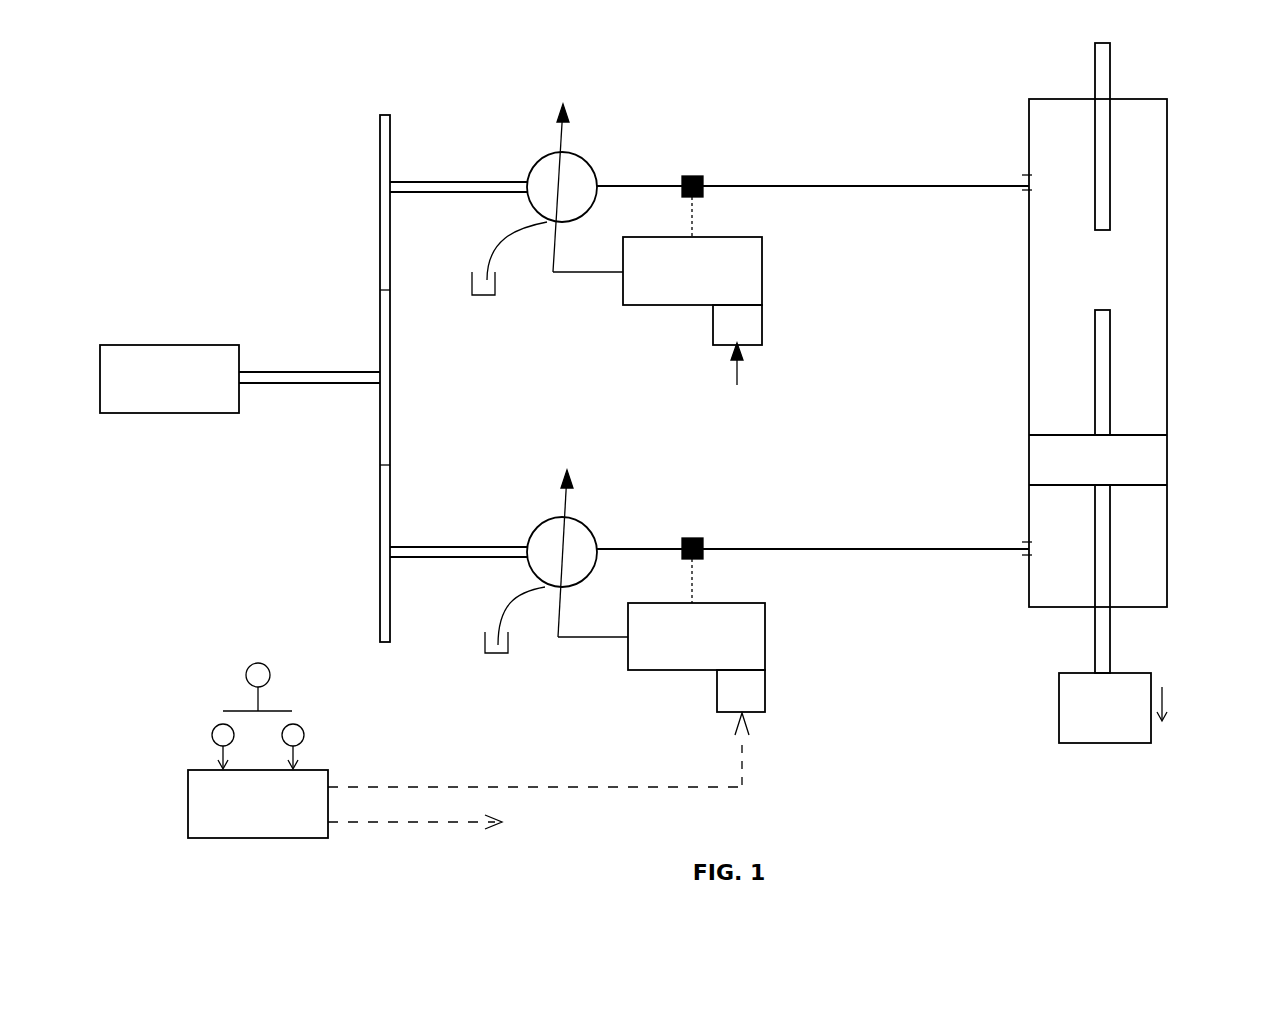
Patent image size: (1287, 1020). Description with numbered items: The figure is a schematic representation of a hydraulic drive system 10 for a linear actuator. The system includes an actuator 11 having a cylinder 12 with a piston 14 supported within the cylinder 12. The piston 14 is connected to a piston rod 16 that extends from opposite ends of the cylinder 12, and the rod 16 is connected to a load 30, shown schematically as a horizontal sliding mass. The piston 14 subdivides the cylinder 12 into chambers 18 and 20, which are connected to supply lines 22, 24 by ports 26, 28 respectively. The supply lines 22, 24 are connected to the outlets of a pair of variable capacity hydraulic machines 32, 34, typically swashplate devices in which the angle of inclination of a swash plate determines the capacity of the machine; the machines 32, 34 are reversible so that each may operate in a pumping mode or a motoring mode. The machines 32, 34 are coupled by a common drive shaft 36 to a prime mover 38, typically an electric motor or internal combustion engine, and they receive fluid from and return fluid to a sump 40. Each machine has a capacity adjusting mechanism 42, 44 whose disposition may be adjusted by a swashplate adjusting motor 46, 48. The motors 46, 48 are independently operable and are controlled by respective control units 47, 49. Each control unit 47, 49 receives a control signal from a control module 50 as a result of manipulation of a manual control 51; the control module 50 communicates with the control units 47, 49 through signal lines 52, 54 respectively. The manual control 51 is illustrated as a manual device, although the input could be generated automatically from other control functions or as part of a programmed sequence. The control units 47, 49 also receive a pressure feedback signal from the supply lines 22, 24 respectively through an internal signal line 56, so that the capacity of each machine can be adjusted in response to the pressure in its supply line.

The hydraulic drive system 10 is at (726, 118).
The actuator 11 is at (1062, 92).
The cylinder 12 is at (1180, 182).
The piston 14 is at (1157, 457).
The piston rod 16 is at (1110, 88).
The chamber 18 is at (1155, 600).
The chamber 20 is at (1157, 245).
The supply line 22 is at (855, 548).
The supply line 24 is at (855, 185).
The port 26 is at (1025, 545).
The port 28 is at (1027, 178).
The load 30 is at (1082, 685).
The variable capacity hydraulic machine 32 is at (543, 535).
The variable capacity hydraulic machine 34 is at (551, 178).
The common drive shaft 36 is at (423, 198).
The prime mover 38 is at (170, 405).
The sump 40 is at (490, 296).
The capacity adjusting mechanism 42 is at (568, 500).
The capacity adjusting mechanism 44 is at (565, 140).
The swashplate adjusting motor 46 is at (760, 630).
The control unit 47 is at (742, 737).
The swashplate adjusting motor 48 is at (757, 258).
The control unit 49 is at (750, 337).
The control module 50 is at (258, 832).
The manual control 51 is at (260, 692).
The signal line 52 is at (575, 787).
The signal line 54 is at (392, 822).
The internal signal line 56 is at (693, 210).